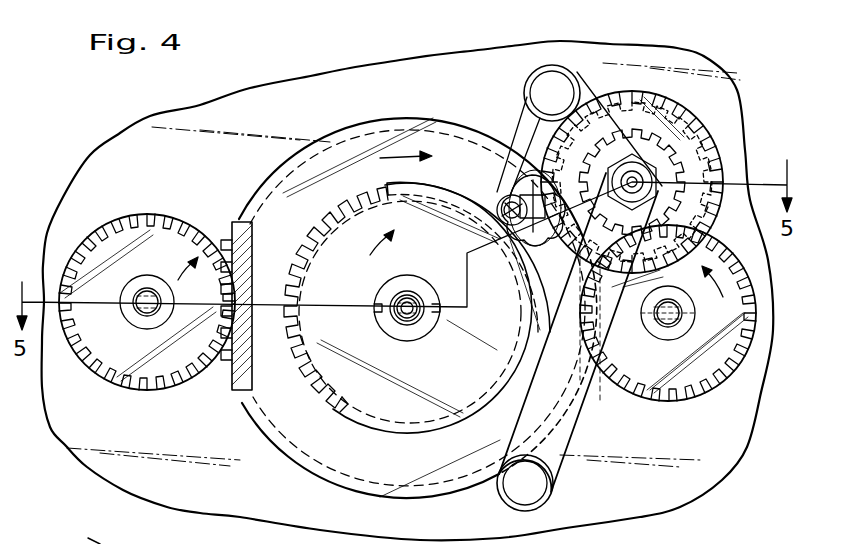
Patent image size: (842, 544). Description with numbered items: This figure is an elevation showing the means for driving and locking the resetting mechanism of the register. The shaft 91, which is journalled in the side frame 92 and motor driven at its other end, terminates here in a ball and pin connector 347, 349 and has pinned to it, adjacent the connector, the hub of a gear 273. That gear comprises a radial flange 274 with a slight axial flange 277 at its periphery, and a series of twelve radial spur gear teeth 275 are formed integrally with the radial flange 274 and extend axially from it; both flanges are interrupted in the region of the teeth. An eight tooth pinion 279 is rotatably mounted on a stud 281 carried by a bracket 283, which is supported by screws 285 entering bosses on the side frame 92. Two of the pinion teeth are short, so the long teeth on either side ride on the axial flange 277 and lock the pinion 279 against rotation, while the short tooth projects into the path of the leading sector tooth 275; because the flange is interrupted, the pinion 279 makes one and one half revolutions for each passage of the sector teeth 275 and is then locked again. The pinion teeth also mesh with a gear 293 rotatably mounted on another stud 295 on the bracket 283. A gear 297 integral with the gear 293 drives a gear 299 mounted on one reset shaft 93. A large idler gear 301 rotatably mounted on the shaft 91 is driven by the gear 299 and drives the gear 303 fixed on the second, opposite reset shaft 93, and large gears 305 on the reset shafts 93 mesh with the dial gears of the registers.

The side frame 92 is at (75, 437).
The large gear 305 is at (96, 543).
The gear 303 is at (153, 237).
The reset shaft 93 is at (148, 290).
The large idler gear 301 is at (232, 372).
The radial flange 274 is at (418, 308).
The radial spur gear teeth 275 is at (337, 210).
The gear 273 is at (344, 413).
The axial flange 277 is at (453, 192).
The shaft 91 is at (408, 297).
The ball and pin connector 349 is at (384, 303).
The ball and pin connector 347 is at (396, 320).
The stud 281 is at (509, 223).
The eight tooth pinion 279 is at (505, 190).
The screws 285 is at (545, 93).
The bracket 283 is at (578, 410).
The gear 293 is at (673, 102).
The stud 295 is at (660, 173).
The gear 297 is at (703, 133).
The gear 299 is at (700, 392).